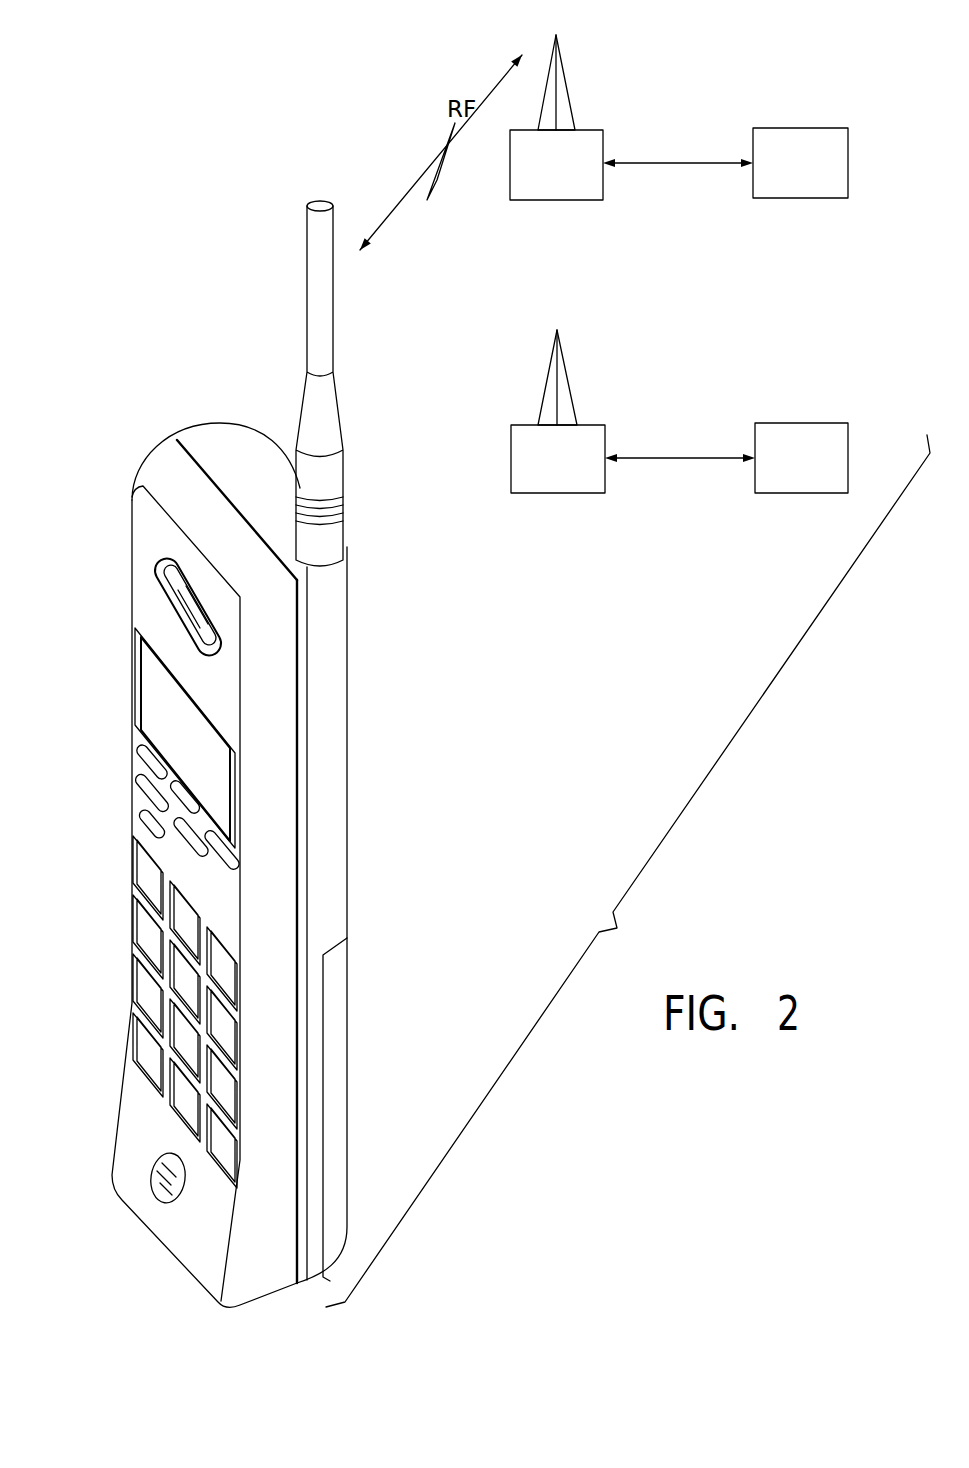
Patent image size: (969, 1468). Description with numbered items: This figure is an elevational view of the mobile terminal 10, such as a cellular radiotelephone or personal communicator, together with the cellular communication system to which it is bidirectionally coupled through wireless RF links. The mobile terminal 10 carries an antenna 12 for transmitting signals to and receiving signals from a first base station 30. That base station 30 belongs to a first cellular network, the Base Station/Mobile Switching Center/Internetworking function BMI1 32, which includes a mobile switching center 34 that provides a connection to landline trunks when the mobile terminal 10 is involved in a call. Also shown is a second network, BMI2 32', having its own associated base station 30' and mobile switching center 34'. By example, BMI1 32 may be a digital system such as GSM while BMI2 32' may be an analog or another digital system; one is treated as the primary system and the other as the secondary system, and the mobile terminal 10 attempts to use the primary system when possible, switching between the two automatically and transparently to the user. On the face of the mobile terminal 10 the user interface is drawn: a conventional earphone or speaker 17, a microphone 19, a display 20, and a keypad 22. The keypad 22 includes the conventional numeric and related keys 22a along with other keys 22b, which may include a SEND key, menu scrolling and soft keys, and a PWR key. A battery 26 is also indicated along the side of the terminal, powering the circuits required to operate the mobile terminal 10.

The mobile terminal 10 is at (107, 430).
The antenna 12 is at (313, 272).
The speaker 17 is at (177, 585).
The microphone 19 is at (157, 1188).
The display 20 is at (152, 696).
The keypad 22 is at (232, 1015).
The numeric and related keys 22a is at (145, 1032).
The other keys 22b is at (145, 765).
The battery 26 is at (340, 1077).
The base station 30 is at (568, 117).
The base station 30' is at (572, 411).
The Base Station/Mobile Switching Center/Internetworking function (BMI1) 32 is at (680, 151).
The BMI2 32' is at (680, 447).
The mobile switching center (MSC) 34 is at (800, 132).
The mobile switching center (MSC) 34' is at (801, 428).